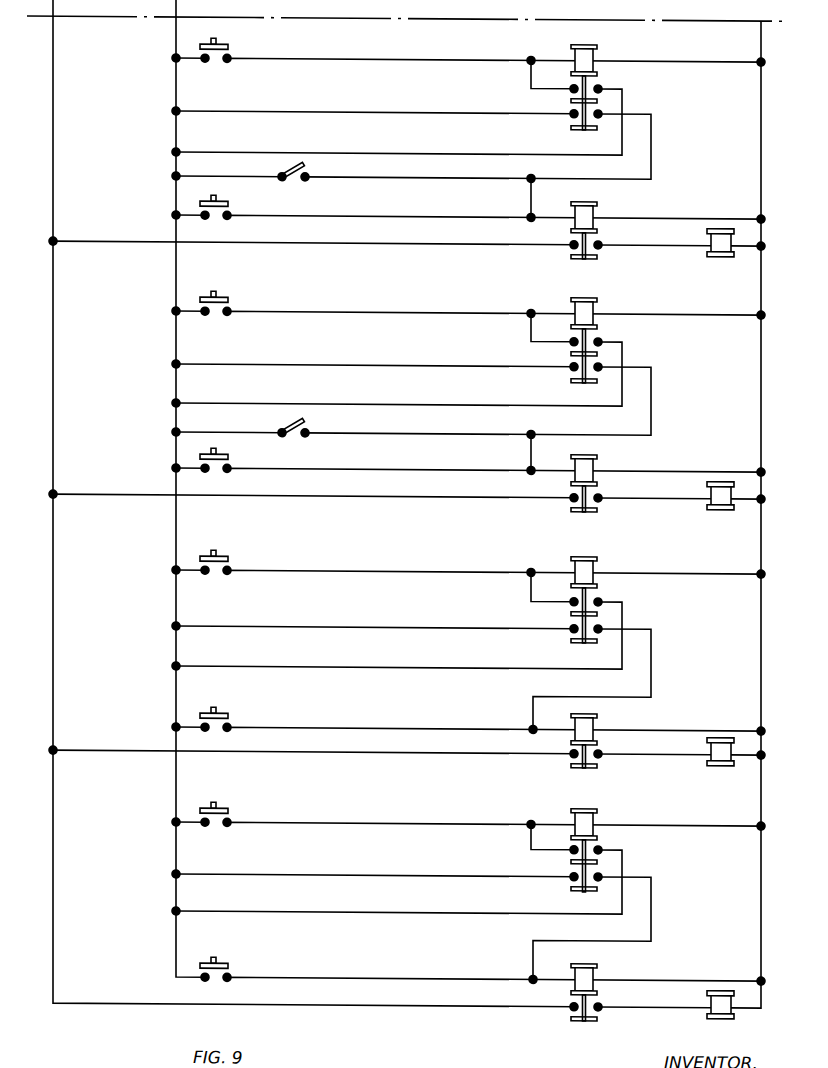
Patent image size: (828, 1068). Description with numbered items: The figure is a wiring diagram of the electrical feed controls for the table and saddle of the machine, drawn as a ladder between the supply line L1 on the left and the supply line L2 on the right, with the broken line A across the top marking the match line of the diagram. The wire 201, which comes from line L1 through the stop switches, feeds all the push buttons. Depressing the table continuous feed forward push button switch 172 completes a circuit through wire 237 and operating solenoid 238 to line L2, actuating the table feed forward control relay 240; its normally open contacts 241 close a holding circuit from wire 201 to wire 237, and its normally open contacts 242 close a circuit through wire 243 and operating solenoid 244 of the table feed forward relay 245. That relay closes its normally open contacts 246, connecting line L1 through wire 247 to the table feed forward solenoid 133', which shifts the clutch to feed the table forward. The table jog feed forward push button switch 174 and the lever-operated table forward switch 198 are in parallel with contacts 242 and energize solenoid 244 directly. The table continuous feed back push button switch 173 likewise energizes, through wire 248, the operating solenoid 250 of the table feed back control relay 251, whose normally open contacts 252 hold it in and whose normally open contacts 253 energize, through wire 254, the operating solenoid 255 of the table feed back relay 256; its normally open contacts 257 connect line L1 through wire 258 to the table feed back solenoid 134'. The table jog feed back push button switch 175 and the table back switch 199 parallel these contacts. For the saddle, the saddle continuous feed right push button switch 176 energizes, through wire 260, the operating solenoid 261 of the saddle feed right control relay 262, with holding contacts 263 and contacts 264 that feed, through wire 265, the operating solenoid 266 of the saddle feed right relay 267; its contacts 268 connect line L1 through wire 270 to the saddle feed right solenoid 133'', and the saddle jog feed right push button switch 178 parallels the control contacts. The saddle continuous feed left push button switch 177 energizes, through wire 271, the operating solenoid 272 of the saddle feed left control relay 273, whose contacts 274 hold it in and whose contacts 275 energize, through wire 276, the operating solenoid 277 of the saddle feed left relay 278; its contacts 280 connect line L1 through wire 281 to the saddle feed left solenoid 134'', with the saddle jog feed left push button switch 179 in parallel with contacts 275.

The section line A- A is at (400, 19).
The line L-1 L1 is at (53, 108).
The line L-2 L2 is at (761, 163).
The wire 201 is at (176, 346).
The table continuous feed forward push button switch 172 is at (216, 36).
The wire 237 is at (294, 58).
The operating solenoid 238 is at (586, 44).
The normally open contacts 241 is at (594, 89).
The normally open contacts 242 is at (594, 115).
The table feed forward control relay 240 is at (582, 129).
The table forward switch 198 is at (290, 170).
The wire 243 is at (326, 176).
The table jog feed forward push button switch 174 is at (214, 194).
The operating solenoid 244 is at (587, 201).
The table feed forward relay 245 is at (584, 258).
The normally open contacts 246 is at (602, 250).
The wire 247 is at (661, 240).
The table feed forward solenoid 133' is at (727, 266).
The table continuous feed back push button switch 173 is at (218, 290).
The wire 248 is at (343, 311).
The operating solenoid 250 is at (588, 298).
The normally open contacts 252 is at (595, 342).
The normally open contacts 253 is at (595, 368).
The table feed back control relay 251 is at (584, 382).
The table back switch 199 is at (283, 430).
The wire 254 is at (333, 432).
The table jog feed back push button switch 175 is at (215, 448).
The operating solenoid 255 is at (588, 455).
The table feed back relay 256 is at (584, 511).
The normally open contacts 257 is at (601, 502).
The wire 258 is at (659, 494).
The table feed back solenoid 134' is at (722, 517).
The saddle continuous feed right push button switch 176 is at (215, 549).
The wire 260 is at (358, 540).
The operating solenoid 261 is at (587, 558).
The normally open contacts 263 is at (595, 601).
The normally open contacts 264 is at (595, 630).
The saddle feed right control relay 262 is at (583, 644).
The wire 265 is at (651, 670).
The saddle jog feed right push button switch 178 is at (215, 706).
The operating solenoid 266 is at (588, 716).
The saddle feed right relay 267 is at (584, 767).
The normally open contacts 268 is at (601, 752).
The wire 270 is at (670, 757).
The saddle feed right solenoid 133'' is at (720, 777).
The saddle continuous feed left push button switch 177 is at (214, 800).
The wire 271 is at (350, 801).
The operating solenoid 272 is at (588, 810).
The normally open contacts 274 is at (595, 850).
The normally open contacts 275 is at (595, 878).
The saddle feed left control relay 273 is at (584, 891).
The saddle jog feed left push button switch 179 is at (215, 956).
The wire 276 is at (350, 959).
The operating solenoid 277 is at (587, 967).
The saddle feed left relay 278 is at (582, 1021).
The normally open contacts 280 is at (600, 1007).
The wire 281 is at (643, 1006).
The saddle feed left solenoid 134'' is at (692, 1021).